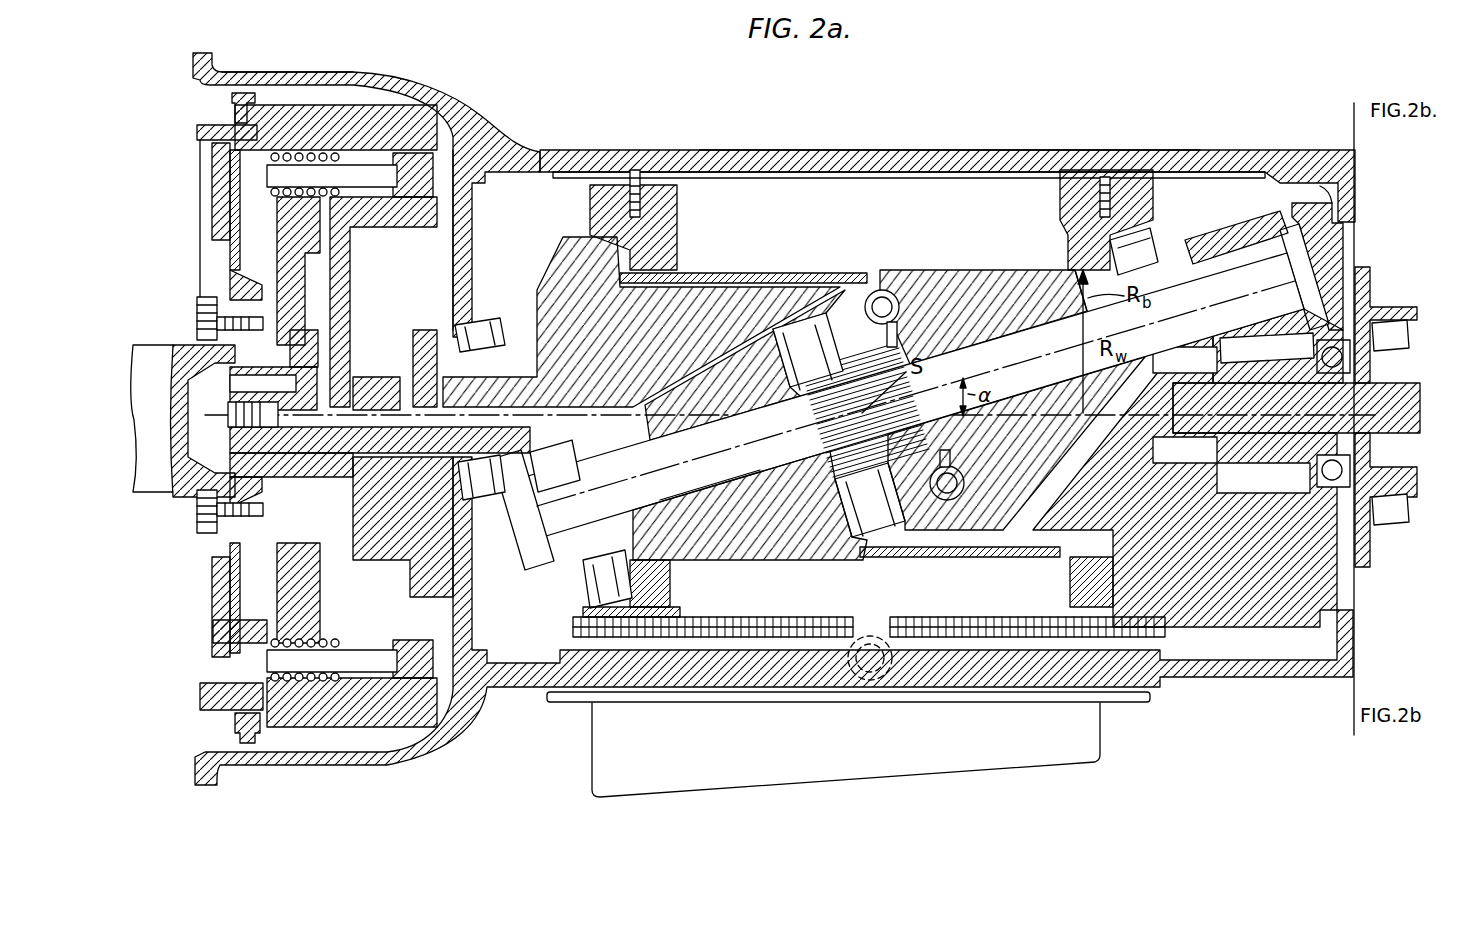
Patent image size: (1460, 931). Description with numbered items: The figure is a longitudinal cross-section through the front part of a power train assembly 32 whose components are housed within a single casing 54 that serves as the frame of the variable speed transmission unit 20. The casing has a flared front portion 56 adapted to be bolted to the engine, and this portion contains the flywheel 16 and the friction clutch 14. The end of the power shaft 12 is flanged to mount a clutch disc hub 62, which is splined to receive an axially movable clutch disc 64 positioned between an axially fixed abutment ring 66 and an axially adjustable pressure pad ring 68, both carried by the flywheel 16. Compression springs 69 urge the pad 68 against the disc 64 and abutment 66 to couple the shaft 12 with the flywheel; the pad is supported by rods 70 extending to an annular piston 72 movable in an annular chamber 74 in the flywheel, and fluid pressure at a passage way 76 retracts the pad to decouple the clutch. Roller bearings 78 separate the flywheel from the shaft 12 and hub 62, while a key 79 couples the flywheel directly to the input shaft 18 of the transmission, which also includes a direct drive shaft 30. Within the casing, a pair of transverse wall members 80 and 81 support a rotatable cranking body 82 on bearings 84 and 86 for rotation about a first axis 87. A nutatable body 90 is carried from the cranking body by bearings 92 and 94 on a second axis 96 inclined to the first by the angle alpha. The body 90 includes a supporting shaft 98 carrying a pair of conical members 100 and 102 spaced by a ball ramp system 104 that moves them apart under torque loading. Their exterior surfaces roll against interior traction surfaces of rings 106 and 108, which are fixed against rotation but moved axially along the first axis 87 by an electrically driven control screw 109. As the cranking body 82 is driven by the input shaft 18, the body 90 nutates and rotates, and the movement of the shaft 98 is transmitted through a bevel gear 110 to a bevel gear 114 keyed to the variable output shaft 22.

The power shaft 12 is at (145, 482).
The friction clutch 14 is at (201, 228).
The flywheel 16 is at (393, 107).
The input shaft 18 is at (366, 436).
The variable speed transmission unit 20 is at (820, 206).
The output shaft 22 is at (1373, 393).
The direct drive shaft 30 is at (1336, 426).
The power train assembly 32 is at (805, 141).
The casing 54 is at (1079, 158).
The flared front portion 56 is at (354, 71).
The clutch disc hub 62 is at (248, 297).
The clutch disc 64 is at (231, 244).
The abutment ring 66 is at (214, 186).
The pressure pad ring 68 is at (248, 614).
The compression springs 69 is at (312, 154).
The rods 70 is at (362, 170).
The annular piston 72 is at (414, 150).
The annular chamber 74 is at (428, 200).
The passage way 76 is at (400, 338).
The roller bearings 78 is at (267, 338).
The key 79 is at (235, 390).
The transverse wall member 80 is at (464, 244).
The transverse wall member 81 is at (1322, 188).
The cranking body 82 is at (652, 342).
The bearing 84 is at (490, 338).
The bearing 86 is at (1388, 522).
The first axis 87 is at (696, 413).
The nutatable body 90 is at (948, 266).
The bearing 92 is at (597, 578).
The bearing 94 is at (1143, 257).
The second axis 96 is at (708, 474).
The supporting shaft 98 is at (663, 482).
The conical member 100 is at (812, 536).
The conical member 102 is at (974, 307).
The ball ramp system 104 is at (854, 313).
The ring 106 is at (654, 255).
The ring 108 is at (1075, 229).
The control screw 109 is at (903, 617).
The bevel gear 110 is at (1223, 237).
The bevel gear 114 is at (1296, 386).